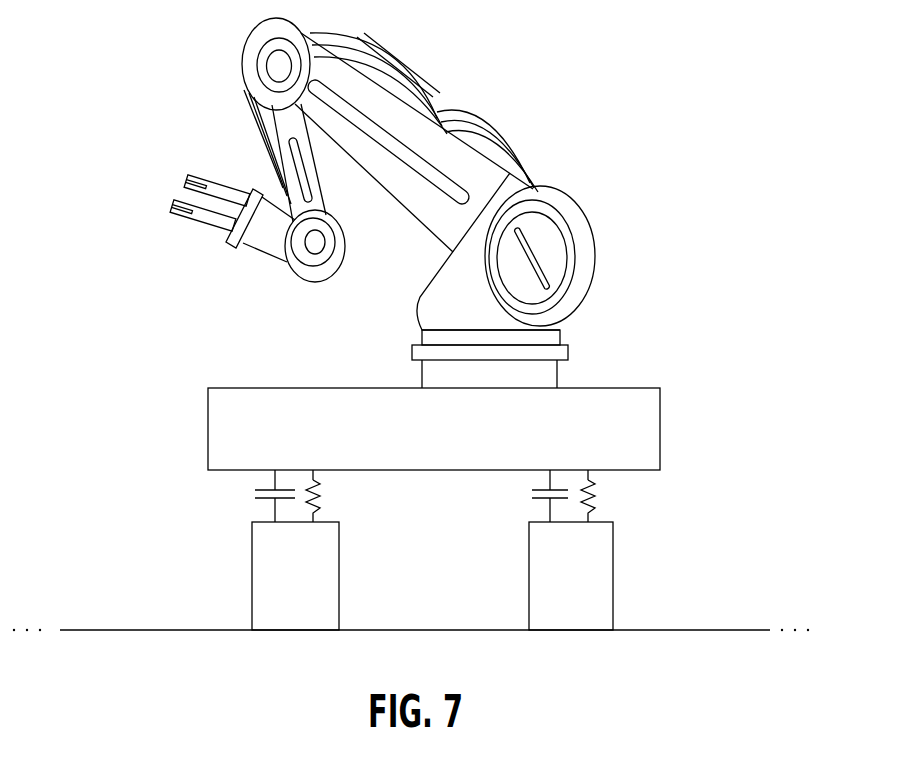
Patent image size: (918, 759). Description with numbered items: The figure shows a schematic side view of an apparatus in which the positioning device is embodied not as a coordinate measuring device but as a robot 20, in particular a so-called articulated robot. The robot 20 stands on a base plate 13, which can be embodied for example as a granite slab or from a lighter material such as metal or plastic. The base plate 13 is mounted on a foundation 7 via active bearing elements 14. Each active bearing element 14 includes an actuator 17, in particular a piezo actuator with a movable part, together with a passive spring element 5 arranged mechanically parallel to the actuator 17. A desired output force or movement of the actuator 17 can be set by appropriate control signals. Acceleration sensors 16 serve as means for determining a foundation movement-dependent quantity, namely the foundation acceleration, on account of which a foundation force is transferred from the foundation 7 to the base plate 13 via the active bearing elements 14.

The robot 20 is at (580, 203).
The base plate 13 is at (207, 387).
The active bearing element 14 is at (230, 489).
The actuator 17 is at (261, 499).
The spring element 5 is at (320, 501).
The acceleration sensor 16 is at (277, 610).
The foundation 7 is at (108, 630).